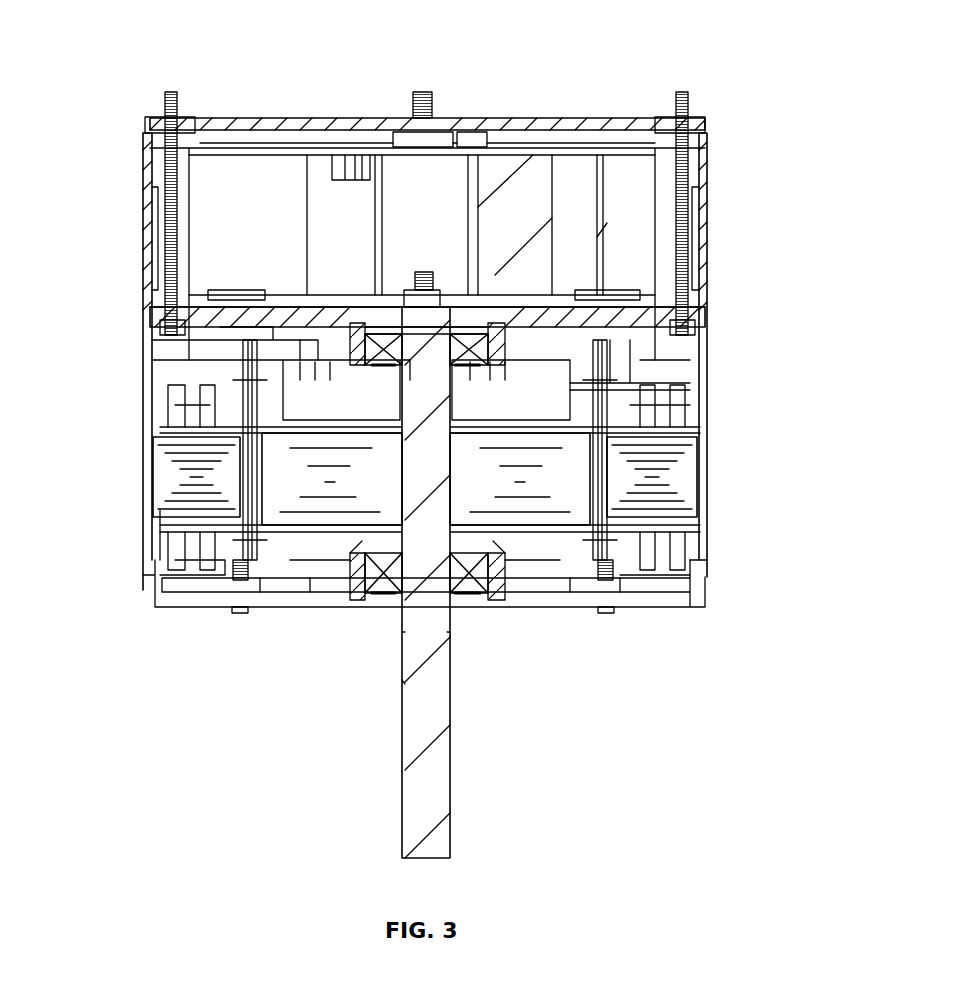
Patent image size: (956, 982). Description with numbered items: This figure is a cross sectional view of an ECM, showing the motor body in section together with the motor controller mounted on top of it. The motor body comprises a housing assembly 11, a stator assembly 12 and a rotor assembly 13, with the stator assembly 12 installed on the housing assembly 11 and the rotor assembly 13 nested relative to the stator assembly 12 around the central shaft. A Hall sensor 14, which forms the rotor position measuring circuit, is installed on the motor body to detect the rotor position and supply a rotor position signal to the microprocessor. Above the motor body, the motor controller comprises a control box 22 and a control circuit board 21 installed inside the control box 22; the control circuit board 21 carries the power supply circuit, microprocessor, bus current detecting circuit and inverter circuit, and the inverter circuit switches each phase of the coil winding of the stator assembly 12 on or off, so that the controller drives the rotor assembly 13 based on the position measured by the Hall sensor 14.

The housing assembly 11 is at (703, 563).
The stator assembly 12 is at (668, 478).
The rotor assembly 13 is at (357, 482).
The Hall sensor 14 is at (628, 383).
The control circuit board 21 is at (305, 148).
The control box 22 is at (147, 215).